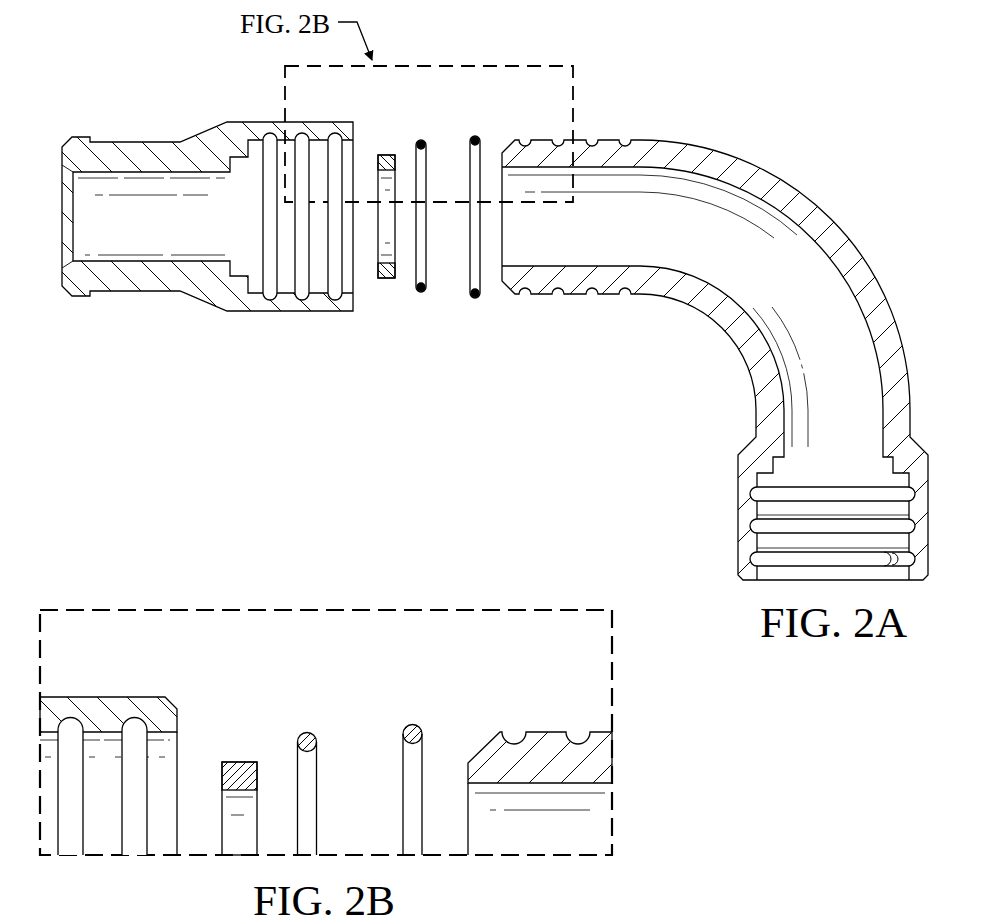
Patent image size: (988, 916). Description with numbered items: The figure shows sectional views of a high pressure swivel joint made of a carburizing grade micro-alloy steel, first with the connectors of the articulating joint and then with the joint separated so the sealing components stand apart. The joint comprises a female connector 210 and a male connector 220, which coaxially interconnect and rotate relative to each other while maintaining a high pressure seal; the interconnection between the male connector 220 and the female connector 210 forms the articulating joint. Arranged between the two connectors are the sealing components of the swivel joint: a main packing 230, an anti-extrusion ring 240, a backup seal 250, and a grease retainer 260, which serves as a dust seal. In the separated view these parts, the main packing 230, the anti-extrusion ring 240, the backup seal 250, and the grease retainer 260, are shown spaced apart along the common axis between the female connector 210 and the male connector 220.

In FIG. 2A, the female connector 210 is at (123, 279).
In FIG. 2A, the male connector 220 is at (716, 163).
In FIG. 2A, the main packing 230 is at (377, 256).
In FIG. 2B, the main packing 230 is at (222, 810).
In FIG. 2A, the anti-extrusion ring 240 is at (382, 156).
In FIG. 2B, the anti-extrusion ring 240 is at (224, 763).
In FIG. 2A, the backup seal 250 is at (420, 142).
In FIG. 2B, the backup seal 250 is at (305, 733).
In FIG. 2A, the grease retainer 260 is at (473, 138).
In FIG. 2B, the grease retainer 260 is at (412, 725).